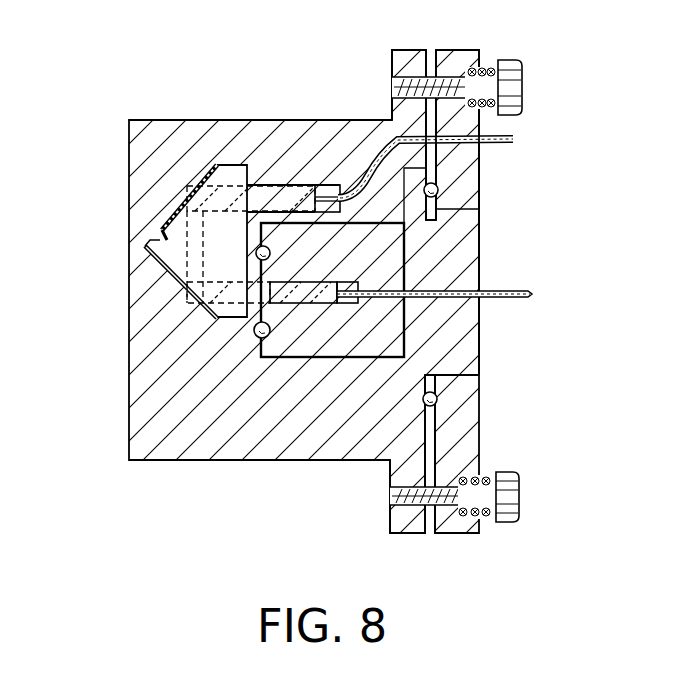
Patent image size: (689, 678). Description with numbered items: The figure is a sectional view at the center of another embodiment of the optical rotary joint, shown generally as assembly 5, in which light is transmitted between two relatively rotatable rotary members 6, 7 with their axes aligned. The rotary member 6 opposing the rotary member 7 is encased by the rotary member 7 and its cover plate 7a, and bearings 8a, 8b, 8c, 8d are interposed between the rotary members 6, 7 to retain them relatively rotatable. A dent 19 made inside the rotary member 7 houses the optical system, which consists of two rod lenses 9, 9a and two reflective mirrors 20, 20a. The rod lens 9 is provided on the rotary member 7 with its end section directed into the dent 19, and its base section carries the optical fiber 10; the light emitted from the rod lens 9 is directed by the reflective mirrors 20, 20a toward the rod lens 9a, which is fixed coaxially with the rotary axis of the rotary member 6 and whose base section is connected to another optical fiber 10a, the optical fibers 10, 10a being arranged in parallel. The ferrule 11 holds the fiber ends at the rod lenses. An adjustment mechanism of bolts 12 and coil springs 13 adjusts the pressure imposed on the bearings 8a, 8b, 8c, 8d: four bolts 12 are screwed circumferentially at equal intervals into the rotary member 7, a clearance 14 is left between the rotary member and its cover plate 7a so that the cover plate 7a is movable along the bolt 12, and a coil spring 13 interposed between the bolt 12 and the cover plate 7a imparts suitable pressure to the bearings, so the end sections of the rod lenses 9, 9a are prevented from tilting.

The fiber optic coupling device 5 is at (177, 104).
The rotary member 6 is at (472, 347).
The rotary member 7 is at (268, 121).
The cover plate 7a is at (476, 50).
The bearing 8a is at (262, 253).
The bearing 8b is at (262, 331).
The bearing 8c is at (438, 190).
The bearing 8d is at (437, 401).
The rod lens 9 is at (284, 184).
The rod lens 9a is at (308, 281).
The optical fiber 10 is at (514, 138).
The optical fiber 10a is at (508, 298).
The ferrule 11 is at (329, 185).
The bolt 12 is at (522, 86).
The coil spring 13 is at (489, 70).
The clearance 14 is at (444, 78).
The dent 19 is at (150, 240).
The reflective mirror 20 is at (170, 217).
The reflective mirror 20a is at (180, 282).